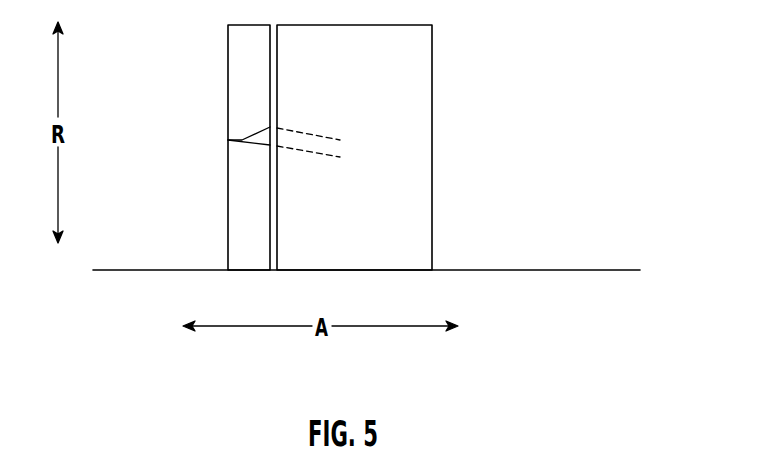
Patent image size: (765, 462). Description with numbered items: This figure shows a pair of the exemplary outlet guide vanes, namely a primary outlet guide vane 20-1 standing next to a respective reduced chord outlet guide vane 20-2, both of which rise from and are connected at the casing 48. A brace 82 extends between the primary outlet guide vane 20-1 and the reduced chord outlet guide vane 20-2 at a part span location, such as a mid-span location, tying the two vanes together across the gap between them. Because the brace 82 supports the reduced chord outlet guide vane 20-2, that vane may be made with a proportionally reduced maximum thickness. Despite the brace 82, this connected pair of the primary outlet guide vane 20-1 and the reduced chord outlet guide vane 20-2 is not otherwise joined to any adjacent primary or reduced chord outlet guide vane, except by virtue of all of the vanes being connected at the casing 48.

The primary outlet guide vane 20-1 is at (408, 107).
The reduced chord outlet guide vane 20-2 is at (243, 90).
The brace 82 is at (265, 136).
The casing 48 is at (540, 270).